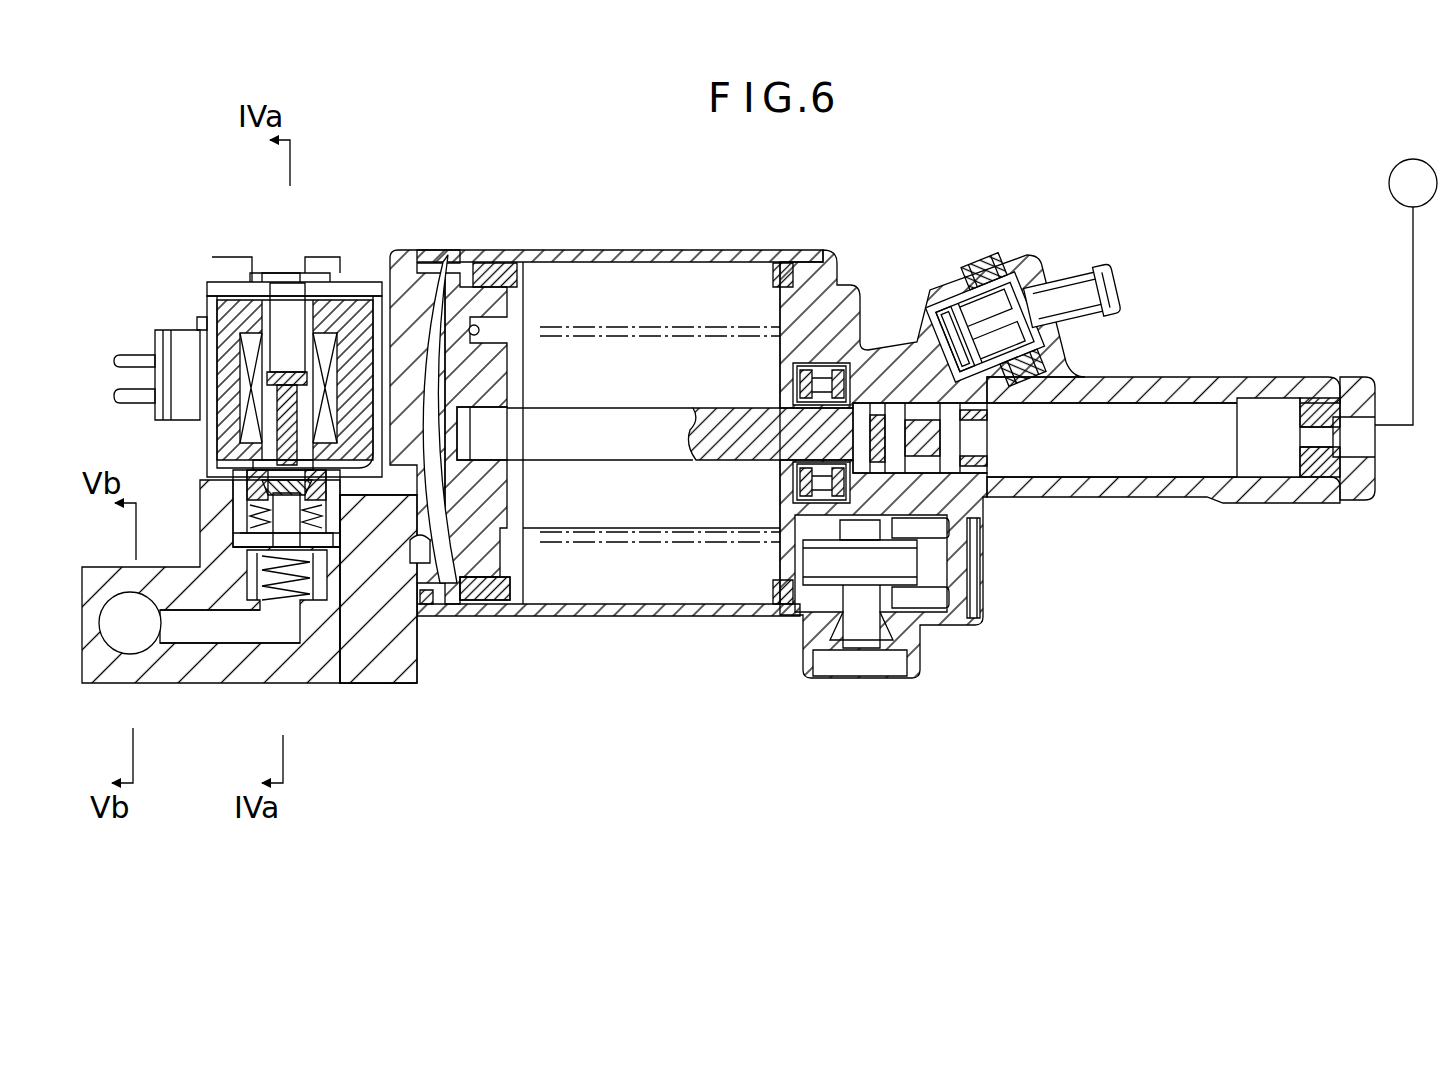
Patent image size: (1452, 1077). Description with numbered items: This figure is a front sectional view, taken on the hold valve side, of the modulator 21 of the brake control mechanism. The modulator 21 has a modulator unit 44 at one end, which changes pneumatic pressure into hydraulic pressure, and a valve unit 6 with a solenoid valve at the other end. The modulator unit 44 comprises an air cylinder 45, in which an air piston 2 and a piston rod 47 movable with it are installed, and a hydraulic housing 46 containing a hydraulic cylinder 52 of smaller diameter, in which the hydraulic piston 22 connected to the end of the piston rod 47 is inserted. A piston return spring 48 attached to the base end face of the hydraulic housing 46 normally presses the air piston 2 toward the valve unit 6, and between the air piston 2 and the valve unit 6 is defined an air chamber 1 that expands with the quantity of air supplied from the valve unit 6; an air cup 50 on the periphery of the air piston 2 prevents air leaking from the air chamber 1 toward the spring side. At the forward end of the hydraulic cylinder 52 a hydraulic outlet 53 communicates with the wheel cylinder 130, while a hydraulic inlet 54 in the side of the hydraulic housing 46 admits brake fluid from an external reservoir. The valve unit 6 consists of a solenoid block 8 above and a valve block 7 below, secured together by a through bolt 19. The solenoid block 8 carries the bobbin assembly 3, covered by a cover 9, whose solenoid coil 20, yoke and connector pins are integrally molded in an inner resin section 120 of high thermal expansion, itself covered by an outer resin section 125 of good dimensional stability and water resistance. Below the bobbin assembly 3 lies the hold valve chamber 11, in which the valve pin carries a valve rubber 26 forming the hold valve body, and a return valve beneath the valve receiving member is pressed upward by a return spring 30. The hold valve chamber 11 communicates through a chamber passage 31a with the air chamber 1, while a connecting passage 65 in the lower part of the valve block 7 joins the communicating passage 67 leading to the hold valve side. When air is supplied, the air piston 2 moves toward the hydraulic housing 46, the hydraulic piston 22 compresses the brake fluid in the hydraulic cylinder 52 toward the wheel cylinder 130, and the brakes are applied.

The air chamber 1 is at (436, 300).
The air piston 2 is at (538, 278).
The bobbin assembly 3 is at (200, 285).
The valve unit 6 is at (420, 645).
The valve block 7 is at (215, 541).
The solenoid block 8 is at (176, 326).
The cover 9 is at (272, 275).
The hold valve chamber 11 is at (258, 507).
The through bolt 19 is at (231, 255).
The solenoid coil 20 is at (358, 282).
The modulator 21 is at (855, 242).
The hydraulic piston 22 is at (982, 465).
The valve rubber 26 is at (222, 463).
The return spring 30 is at (314, 590).
The chamber passage 31a is at (382, 512).
The modulator unit 44 is at (992, 620).
The air cylinder 45 is at (666, 270).
The hydraulic housing 46 is at (1107, 388).
The piston rod 47 is at (668, 418).
The piston return spring 48 is at (646, 548).
The air cup 50 is at (515, 610).
The hydraulic cylinder 52 is at (1173, 453).
The hydraulic outlet 53 is at (1377, 445).
The hydraulic inlet 54 is at (1078, 280).
The connecting passage 65 is at (125, 645).
The communicating passage 67 is at (228, 630).
The inner resin section 120 is at (218, 374).
The outer resin section 125 is at (228, 346).
The wheel cylinder 130 is at (1390, 174).